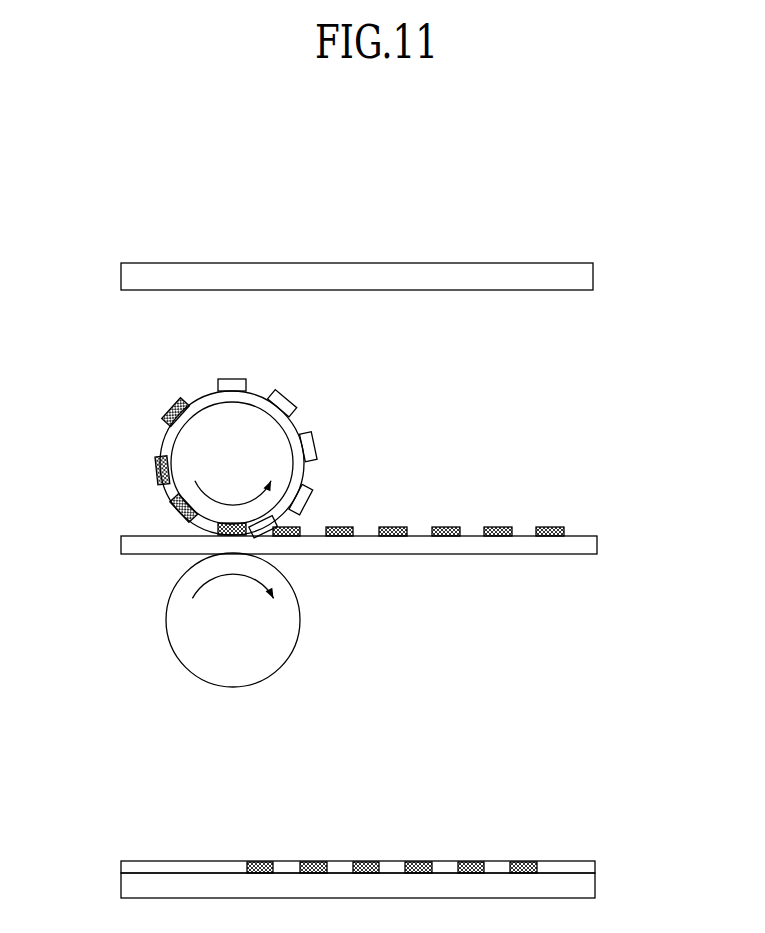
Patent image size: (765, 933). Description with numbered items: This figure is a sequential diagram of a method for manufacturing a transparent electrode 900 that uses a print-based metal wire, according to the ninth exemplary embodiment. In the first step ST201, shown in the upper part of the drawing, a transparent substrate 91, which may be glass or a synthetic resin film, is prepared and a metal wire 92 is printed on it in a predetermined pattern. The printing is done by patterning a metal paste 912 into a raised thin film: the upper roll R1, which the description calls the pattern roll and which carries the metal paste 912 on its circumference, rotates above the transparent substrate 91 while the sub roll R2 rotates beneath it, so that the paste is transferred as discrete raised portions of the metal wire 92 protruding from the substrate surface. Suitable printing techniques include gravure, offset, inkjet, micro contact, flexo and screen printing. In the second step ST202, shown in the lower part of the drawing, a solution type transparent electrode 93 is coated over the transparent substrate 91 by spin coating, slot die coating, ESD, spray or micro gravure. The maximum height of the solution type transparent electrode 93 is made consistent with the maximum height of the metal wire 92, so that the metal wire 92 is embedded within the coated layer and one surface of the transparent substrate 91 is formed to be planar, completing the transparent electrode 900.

The transparent substrate 91 is at (594, 277).
The metal wire 92 is at (492, 526).
The solution type transparent electrode 93 is at (553, 862).
The metal paste 912 is at (160, 425).
The transparent electrode 900 is at (118, 886).
The transfer roller R1 is at (290, 393).
The sub roll R2 is at (302, 638).
The first step ST201 is at (652, 263).
The second step ST202 is at (603, 850).